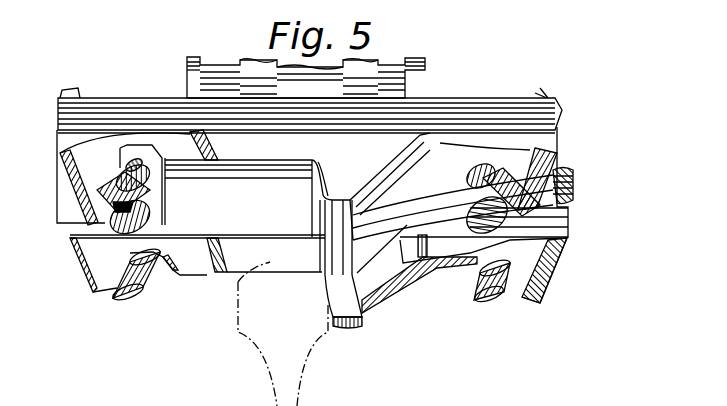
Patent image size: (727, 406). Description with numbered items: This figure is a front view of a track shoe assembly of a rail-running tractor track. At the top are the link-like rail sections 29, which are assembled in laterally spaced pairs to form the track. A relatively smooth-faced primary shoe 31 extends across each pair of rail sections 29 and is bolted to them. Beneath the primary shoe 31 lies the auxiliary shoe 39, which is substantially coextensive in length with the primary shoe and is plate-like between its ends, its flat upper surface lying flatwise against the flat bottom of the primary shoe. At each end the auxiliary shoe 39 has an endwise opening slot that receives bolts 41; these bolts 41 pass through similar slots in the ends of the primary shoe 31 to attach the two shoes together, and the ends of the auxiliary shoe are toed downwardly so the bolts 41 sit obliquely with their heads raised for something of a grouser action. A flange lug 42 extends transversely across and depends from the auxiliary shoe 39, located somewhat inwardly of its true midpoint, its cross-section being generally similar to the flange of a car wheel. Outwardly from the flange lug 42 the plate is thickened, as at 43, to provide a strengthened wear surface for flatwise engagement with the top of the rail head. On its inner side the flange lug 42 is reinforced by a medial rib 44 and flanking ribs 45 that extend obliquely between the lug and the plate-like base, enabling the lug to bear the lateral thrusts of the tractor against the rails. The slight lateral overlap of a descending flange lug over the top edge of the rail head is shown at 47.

The rail sections 29 is at (242, 62).
The primary shoe 31 is at (436, 110).
The auxiliary shoe 39 is at (212, 135).
The bolts 41 is at (150, 205).
The flange lug 42 is at (310, 177).
The thickened plate portion 43 is at (337, 177).
The medial rib 44 is at (403, 200).
The flanking ribs 45 is at (397, 170).
The overlap of flange lug over rail head edge 47 is at (330, 283).